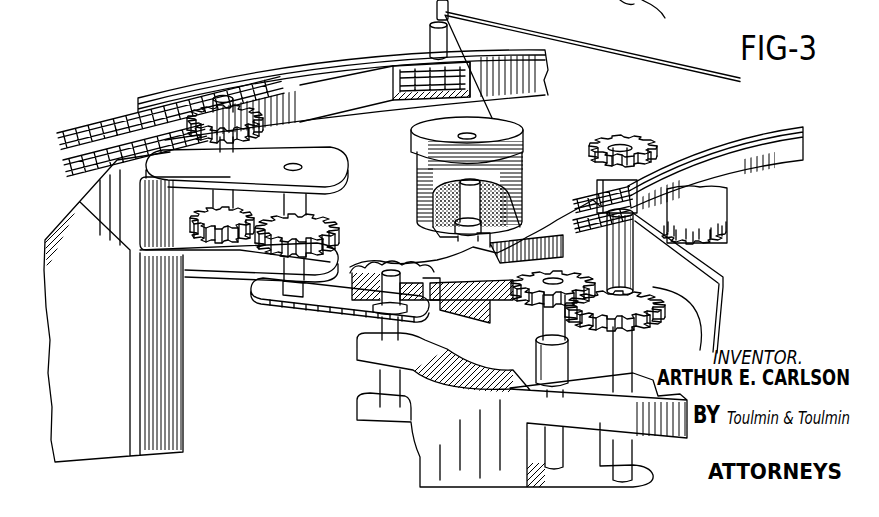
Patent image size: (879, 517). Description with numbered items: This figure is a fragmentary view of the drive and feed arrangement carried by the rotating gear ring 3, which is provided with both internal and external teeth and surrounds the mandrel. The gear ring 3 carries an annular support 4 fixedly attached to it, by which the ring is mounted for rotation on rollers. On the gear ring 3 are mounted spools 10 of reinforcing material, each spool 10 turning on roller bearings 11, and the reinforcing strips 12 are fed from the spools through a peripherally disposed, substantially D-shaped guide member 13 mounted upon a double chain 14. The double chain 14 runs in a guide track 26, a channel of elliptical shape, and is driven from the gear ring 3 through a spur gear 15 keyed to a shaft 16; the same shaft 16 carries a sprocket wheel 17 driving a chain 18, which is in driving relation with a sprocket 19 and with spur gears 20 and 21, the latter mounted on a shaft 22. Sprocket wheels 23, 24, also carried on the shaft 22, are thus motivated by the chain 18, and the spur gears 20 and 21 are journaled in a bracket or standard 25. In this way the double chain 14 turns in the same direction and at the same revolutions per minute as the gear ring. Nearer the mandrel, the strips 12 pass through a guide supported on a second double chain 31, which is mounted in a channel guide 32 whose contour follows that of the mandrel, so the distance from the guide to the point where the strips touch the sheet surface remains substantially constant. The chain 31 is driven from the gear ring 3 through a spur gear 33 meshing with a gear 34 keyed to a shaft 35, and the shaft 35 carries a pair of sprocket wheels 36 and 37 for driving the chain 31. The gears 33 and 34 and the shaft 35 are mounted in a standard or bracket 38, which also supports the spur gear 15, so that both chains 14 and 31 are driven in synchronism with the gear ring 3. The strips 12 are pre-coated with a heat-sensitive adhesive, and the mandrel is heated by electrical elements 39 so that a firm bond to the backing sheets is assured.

The gear ring 3 is at (487, 281).
The annular support 4 is at (455, 303).
The spool 10 is at (510, 128).
The roller bearings 11 is at (461, 232).
The reinforcing strip 12 is at (488, 100).
The D-shaped guide member 13 is at (433, 10).
The double chain 14 is at (137, 109).
The spur gear 15 is at (378, 265).
The shaft 16 is at (378, 380).
The sprocket wheel 17 is at (365, 313).
The chain 18 is at (337, 312).
The sprocket 19 is at (275, 289).
The spur gear 20 is at (326, 217).
The spur gear 21 is at (222, 240).
The shaft 22 is at (258, 145).
The sprocket wheel 23 is at (315, 119).
The sprocket wheel 24 is at (206, 101).
The bracket or standard 25 is at (163, 416).
The guide track 26 is at (176, 92).
The double chain 31 is at (582, 200).
The channel guide 32 is at (712, 145).
The spur gear 33 is at (532, 319).
The gear 34 is at (645, 313).
The shaft 35 is at (636, 465).
The sprocket wheel 36 is at (578, 174).
The sprocket wheel 37 is at (613, 138).
The standard or bracket 38 is at (716, 301).
The electrical elements 39 is at (625, 13).